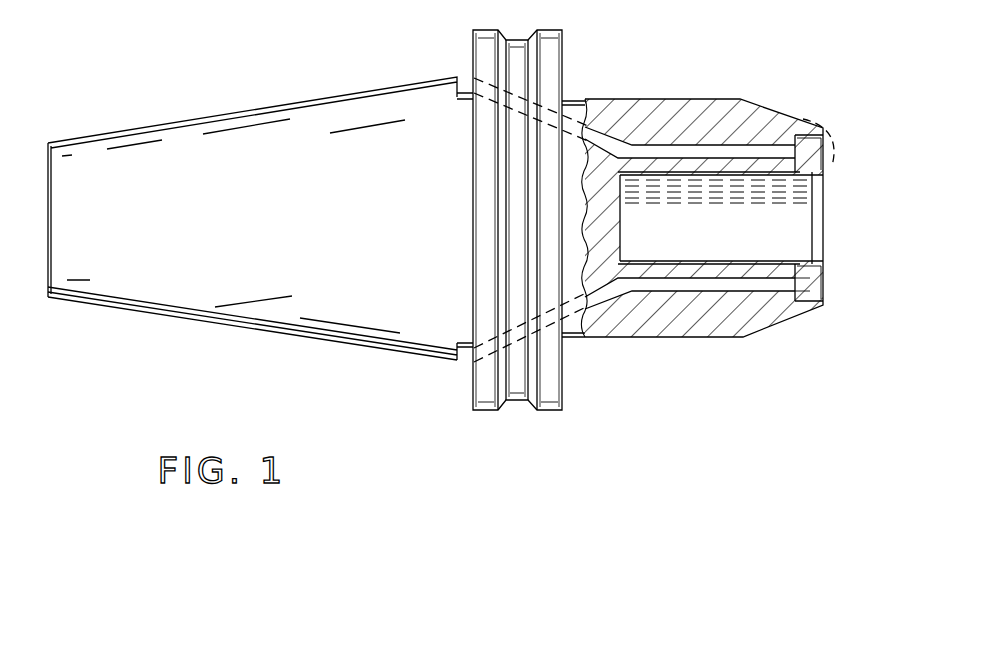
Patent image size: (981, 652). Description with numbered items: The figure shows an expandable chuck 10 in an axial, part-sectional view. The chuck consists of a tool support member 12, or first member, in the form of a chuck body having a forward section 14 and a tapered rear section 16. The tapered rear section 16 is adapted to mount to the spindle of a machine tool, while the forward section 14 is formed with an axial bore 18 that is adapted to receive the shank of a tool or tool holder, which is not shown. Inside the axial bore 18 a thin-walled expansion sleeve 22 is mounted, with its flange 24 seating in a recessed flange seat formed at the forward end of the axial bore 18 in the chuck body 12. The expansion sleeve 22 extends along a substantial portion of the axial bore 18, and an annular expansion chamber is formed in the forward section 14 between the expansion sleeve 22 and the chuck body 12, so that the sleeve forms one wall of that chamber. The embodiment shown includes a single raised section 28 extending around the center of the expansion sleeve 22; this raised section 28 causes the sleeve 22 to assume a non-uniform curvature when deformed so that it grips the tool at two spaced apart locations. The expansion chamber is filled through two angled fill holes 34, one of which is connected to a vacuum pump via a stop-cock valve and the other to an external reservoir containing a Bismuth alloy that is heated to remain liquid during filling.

The expandable chuck 10 is at (703, 405).
The tool support member 12 is at (549, 411).
The forward section 14 is at (714, 110).
The tapered rear section 16 is at (230, 147).
The axial bore 18 is at (832, 205).
The expansion sleeve 22 is at (650, 285).
The flange 24 is at (823, 285).
The raised section 28 is at (727, 142).
The fill holes 34 is at (552, 106).